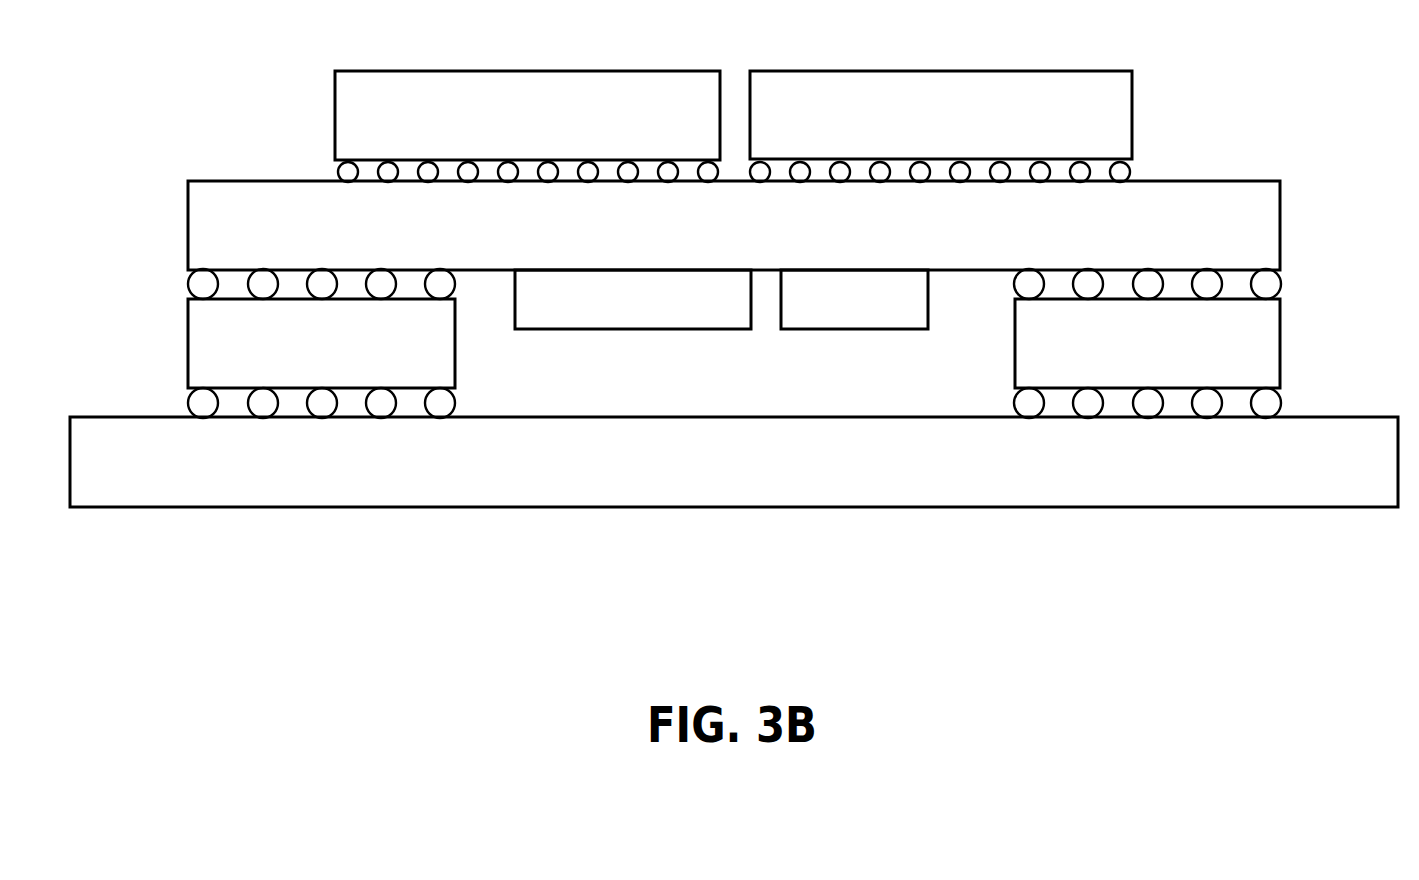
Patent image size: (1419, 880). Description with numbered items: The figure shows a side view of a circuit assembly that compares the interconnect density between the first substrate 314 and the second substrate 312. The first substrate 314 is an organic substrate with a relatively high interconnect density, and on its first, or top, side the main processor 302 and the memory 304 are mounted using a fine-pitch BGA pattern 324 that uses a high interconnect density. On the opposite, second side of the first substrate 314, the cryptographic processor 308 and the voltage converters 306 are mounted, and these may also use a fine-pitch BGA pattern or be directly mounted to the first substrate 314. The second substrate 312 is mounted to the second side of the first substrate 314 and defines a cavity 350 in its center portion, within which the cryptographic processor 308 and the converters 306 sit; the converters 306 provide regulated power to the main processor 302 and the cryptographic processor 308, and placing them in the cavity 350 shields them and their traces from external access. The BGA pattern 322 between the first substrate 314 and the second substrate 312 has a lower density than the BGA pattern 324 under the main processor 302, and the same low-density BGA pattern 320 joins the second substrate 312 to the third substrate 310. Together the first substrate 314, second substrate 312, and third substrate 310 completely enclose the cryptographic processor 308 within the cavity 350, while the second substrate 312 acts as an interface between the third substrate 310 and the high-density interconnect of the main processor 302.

The main processor 302 is at (556, 70).
The memory 304 is at (916, 70).
The voltage converters 306 is at (928, 312).
The cryptographic processor 308 is at (515, 320).
The third substrate 310 is at (418, 508).
The second substrate 312 is at (188, 345).
The first substrate 314 is at (188, 181).
The BGA pattern 320 is at (453, 407).
The BGA pattern 322 is at (190, 285).
The fine-pitch BGA pattern 324 is at (339, 171).
The cavity 350 is at (957, 302).